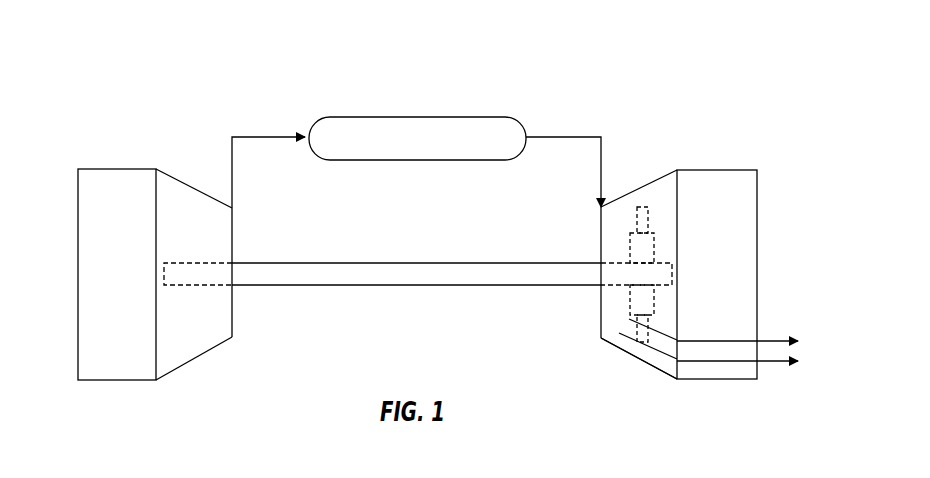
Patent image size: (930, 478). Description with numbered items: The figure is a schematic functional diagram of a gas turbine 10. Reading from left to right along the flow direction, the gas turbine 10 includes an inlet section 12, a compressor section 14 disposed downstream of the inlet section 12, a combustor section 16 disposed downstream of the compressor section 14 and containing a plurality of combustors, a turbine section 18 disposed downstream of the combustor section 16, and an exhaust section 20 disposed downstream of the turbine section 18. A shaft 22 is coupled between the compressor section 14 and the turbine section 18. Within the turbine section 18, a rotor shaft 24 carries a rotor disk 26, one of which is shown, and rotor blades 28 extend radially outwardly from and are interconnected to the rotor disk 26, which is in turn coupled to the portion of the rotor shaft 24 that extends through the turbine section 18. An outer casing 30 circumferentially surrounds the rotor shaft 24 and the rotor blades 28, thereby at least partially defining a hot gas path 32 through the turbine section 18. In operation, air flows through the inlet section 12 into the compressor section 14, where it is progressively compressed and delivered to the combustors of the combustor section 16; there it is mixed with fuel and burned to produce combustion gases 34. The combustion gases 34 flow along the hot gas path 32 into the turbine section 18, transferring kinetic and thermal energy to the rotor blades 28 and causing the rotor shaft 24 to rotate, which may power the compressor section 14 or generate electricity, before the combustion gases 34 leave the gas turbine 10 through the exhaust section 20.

The gas turbine 10 is at (287, 70).
The inlet section 12 is at (95, 168).
The compressor section 14 is at (183, 182).
The combustor section 16 is at (468, 117).
The turbine section 18 is at (665, 174).
The exhaust section 20 is at (732, 170).
The shaft 22 is at (378, 285).
The rotor shaft 24 is at (667, 263).
The rotor disk 26 is at (630, 253).
The rotor blade 28 is at (638, 212).
The outer casing 30 is at (657, 370).
The hot gas path 32 is at (643, 343).
The combustion gases 34 is at (580, 137).